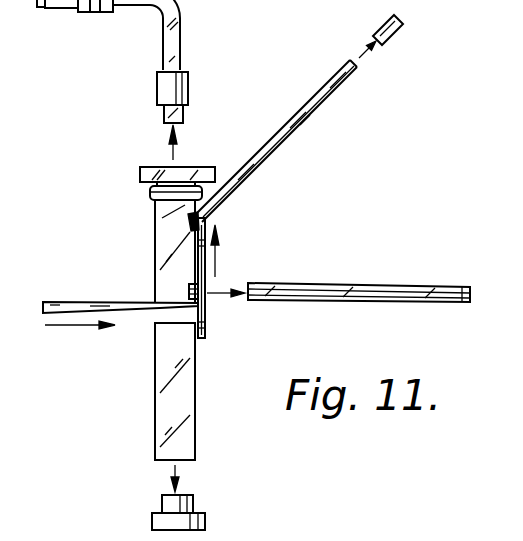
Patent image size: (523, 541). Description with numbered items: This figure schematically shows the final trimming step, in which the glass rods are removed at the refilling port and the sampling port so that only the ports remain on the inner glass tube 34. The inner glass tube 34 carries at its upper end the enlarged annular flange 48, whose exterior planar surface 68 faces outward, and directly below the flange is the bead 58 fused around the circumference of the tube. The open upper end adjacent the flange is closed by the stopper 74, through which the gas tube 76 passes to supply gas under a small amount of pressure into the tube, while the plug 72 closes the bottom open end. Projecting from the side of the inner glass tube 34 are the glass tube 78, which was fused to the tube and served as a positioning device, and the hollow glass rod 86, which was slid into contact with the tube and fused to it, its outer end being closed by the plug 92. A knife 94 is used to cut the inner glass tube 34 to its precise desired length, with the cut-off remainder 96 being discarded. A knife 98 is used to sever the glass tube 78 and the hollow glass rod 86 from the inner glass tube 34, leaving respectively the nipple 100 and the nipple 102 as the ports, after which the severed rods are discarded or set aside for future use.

The gas tube 76 is at (181, 22).
The stopper 74 is at (188, 85).
The exterior planar surface 68 is at (152, 167).
The enlarged annular flange 48 is at (216, 172).
The bead 58 is at (150, 195).
The inner glass tube 34 is at (155, 244).
The nipple 102 is at (189, 226).
The nipple 100 is at (189, 290).
The knife 94 is at (72, 302).
The knife 98 is at (206, 322).
The remainder 96 is at (172, 405).
The plug 72 is at (205, 522).
The hollow glass rod 86 is at (314, 110).
The plug 92 is at (396, 37).
The glass tube 78 is at (343, 286).